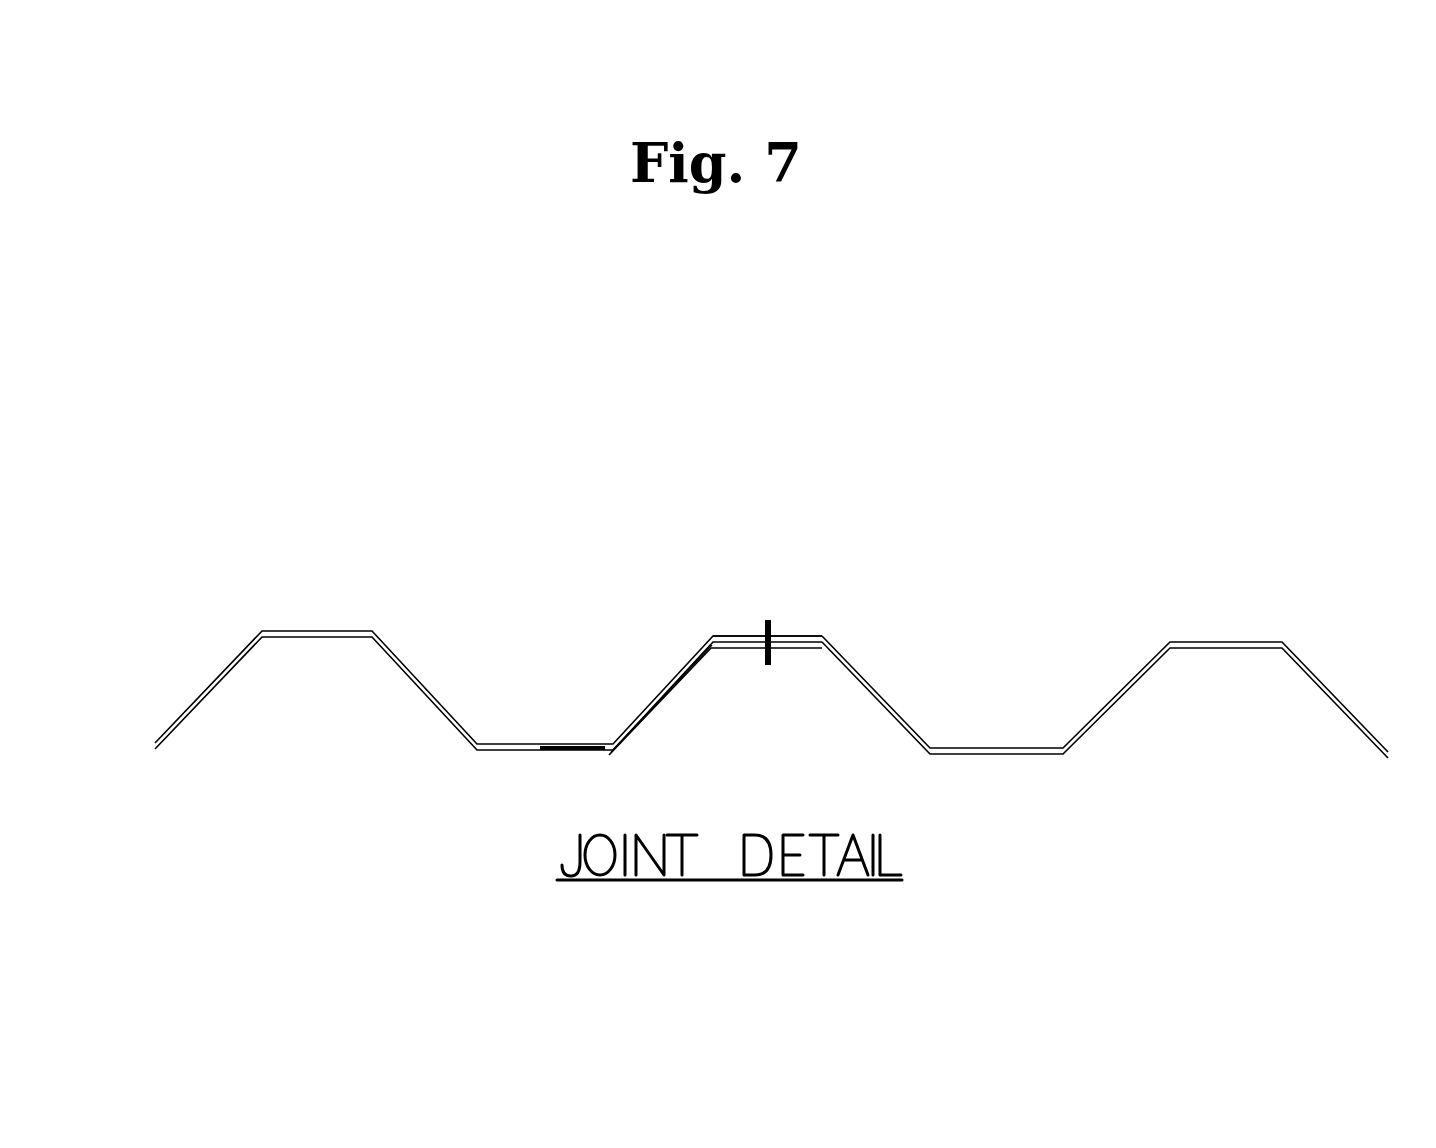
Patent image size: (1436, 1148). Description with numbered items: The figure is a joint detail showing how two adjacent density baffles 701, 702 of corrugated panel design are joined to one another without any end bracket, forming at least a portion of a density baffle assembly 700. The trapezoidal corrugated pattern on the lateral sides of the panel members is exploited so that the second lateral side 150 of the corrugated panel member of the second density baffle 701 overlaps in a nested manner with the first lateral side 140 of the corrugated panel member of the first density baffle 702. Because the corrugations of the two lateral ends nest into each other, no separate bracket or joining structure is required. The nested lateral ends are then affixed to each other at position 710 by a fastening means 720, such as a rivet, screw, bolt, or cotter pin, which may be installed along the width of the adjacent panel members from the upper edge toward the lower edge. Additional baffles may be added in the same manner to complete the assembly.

The density baffle assembly 700 is at (293, 448).
The second density baffle 701 is at (257, 622).
The first density baffle 702 is at (1316, 641).
The second lateral side 150 is at (665, 677).
The first lateral side 140 is at (658, 708).
The fastening means 720 is at (764, 623).
The position 710 is at (782, 626).